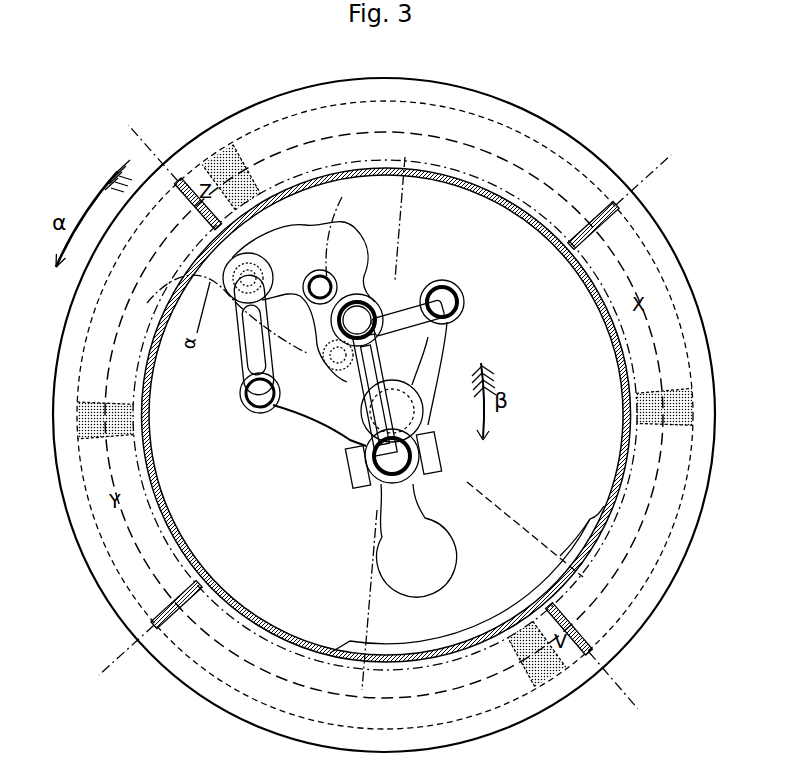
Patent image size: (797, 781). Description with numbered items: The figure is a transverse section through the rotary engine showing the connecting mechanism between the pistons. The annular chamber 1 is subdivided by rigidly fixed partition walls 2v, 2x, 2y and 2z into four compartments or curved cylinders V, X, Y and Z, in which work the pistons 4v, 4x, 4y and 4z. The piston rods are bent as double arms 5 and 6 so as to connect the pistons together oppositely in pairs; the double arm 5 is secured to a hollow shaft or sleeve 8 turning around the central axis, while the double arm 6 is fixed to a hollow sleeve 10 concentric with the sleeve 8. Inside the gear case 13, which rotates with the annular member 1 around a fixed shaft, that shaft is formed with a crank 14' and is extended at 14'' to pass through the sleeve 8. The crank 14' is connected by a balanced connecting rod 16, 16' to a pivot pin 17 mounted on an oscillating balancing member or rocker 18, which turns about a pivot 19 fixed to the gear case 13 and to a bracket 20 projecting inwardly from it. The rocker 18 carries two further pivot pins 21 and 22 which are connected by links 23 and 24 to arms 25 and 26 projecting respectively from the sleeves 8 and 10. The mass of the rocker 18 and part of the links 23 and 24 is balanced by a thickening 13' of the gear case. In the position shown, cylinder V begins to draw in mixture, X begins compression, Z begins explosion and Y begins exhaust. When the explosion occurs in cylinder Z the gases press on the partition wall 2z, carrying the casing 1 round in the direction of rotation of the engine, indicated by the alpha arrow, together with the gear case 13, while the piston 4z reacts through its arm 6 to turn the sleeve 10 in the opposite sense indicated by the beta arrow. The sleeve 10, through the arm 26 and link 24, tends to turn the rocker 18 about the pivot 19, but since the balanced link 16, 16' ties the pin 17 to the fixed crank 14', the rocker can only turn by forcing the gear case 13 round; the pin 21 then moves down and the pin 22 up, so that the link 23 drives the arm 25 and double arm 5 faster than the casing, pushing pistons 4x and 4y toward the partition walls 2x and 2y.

The annular chamber 1 is at (520, 125).
The partition wall 2x is at (607, 222).
The partition wall 2y is at (168, 604).
The partition wall 2z is at (185, 185).
The partition wall 2v is at (580, 633).
The piston 4x is at (672, 410).
The piston 4y is at (90, 418).
The piston 4z is at (222, 163).
The piston 4v is at (553, 675).
The double arm 5 is at (502, 508).
The double arm 6 is at (404, 220).
The hollow shaft or sleeve 8 is at (410, 413).
The hollow shaft or sleeve 10 is at (420, 418).
The gear case 13 is at (433, 579).
The thickening 13' is at (537, 573).
The crank 14' is at (380, 474).
The shaft extension 14'' is at (328, 460).
The balanced connecting rod 16 is at (433, 373).
The balanced connecting rod 16' is at (443, 540).
The pivot pin 17 is at (360, 316).
The oscillating balancing member or rocker 18 is at (292, 250).
The pivot 19 is at (322, 287).
The bracket 20 is at (342, 197).
The pivot pin 21 is at (243, 290).
The pivot pin 22 is at (333, 362).
The link 23 is at (248, 365).
The link 24 is at (395, 328).
The arm 25 is at (310, 410).
The arm 26 is at (443, 302).